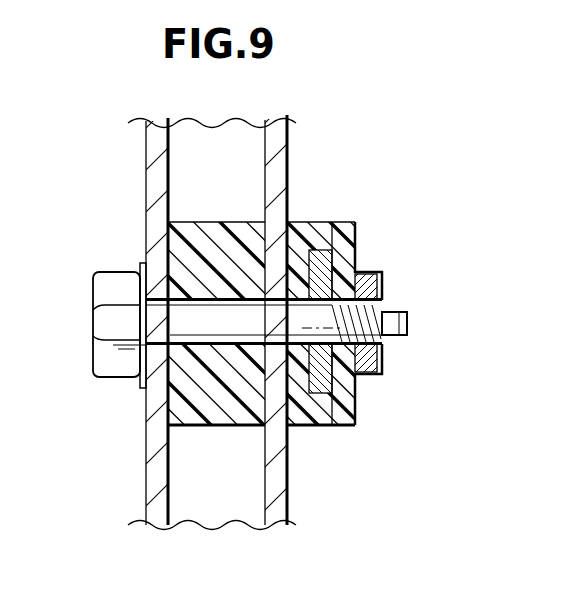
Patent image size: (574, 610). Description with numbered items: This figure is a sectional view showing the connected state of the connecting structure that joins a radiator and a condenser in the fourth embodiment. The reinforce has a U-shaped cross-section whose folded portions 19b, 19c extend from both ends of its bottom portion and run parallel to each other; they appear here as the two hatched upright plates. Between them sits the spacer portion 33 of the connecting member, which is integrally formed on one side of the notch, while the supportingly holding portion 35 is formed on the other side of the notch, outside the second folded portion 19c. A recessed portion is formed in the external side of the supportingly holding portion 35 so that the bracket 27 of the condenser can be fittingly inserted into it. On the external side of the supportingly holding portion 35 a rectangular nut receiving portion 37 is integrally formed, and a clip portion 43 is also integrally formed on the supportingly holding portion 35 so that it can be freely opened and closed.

The folded portion 19b is at (158, 178).
The folded portion 19c is at (275, 138).
The spacer portion 33 is at (213, 231).
The supportingly holding portion 35 is at (301, 232).
The bracket 27 is at (327, 258).
The nut receiving portion 37 is at (396, 349).
The clip portion 43 is at (344, 403).